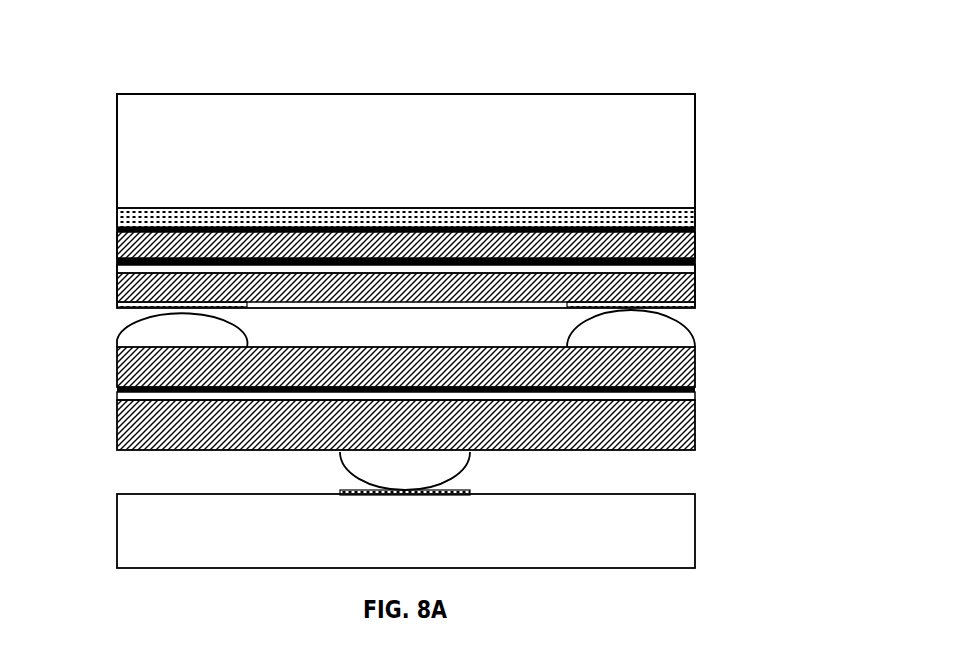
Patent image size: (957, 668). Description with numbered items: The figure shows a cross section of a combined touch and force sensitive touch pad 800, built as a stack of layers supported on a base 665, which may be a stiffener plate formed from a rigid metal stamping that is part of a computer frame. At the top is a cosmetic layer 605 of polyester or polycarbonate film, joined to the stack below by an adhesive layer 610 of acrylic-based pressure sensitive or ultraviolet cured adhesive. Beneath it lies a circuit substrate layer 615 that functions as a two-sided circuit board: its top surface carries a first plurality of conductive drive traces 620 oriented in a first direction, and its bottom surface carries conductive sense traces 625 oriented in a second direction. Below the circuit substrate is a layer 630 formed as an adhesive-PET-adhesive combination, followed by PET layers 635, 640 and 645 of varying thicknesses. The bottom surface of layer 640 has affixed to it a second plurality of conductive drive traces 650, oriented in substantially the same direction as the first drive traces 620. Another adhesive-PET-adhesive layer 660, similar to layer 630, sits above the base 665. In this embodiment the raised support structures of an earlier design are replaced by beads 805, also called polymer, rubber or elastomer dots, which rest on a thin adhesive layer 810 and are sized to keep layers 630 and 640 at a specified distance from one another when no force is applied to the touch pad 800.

The touch pad 800 is at (584, 72).
The cosmetic layer 605 is at (519, 162).
The adhesive layer 610 is at (696, 216).
The conductive drive traces 620 is at (117, 228).
The circuit substrate layer 615 is at (695, 243).
The conductive sense traces 625 is at (117, 260).
The adhesive-PET-adhesive layer 630 is at (695, 267).
The PET layer 635 is at (117, 288).
The PET layer 640 is at (117, 370).
The PET layer 645 is at (117, 425).
The second conductive drive traces 650 is at (696, 387).
The adhesive-PET-adhesive layer 660 is at (695, 397).
The base 665 is at (457, 544).
The beads 805 is at (197, 341).
The thin adhesive layer 810 is at (117, 303).